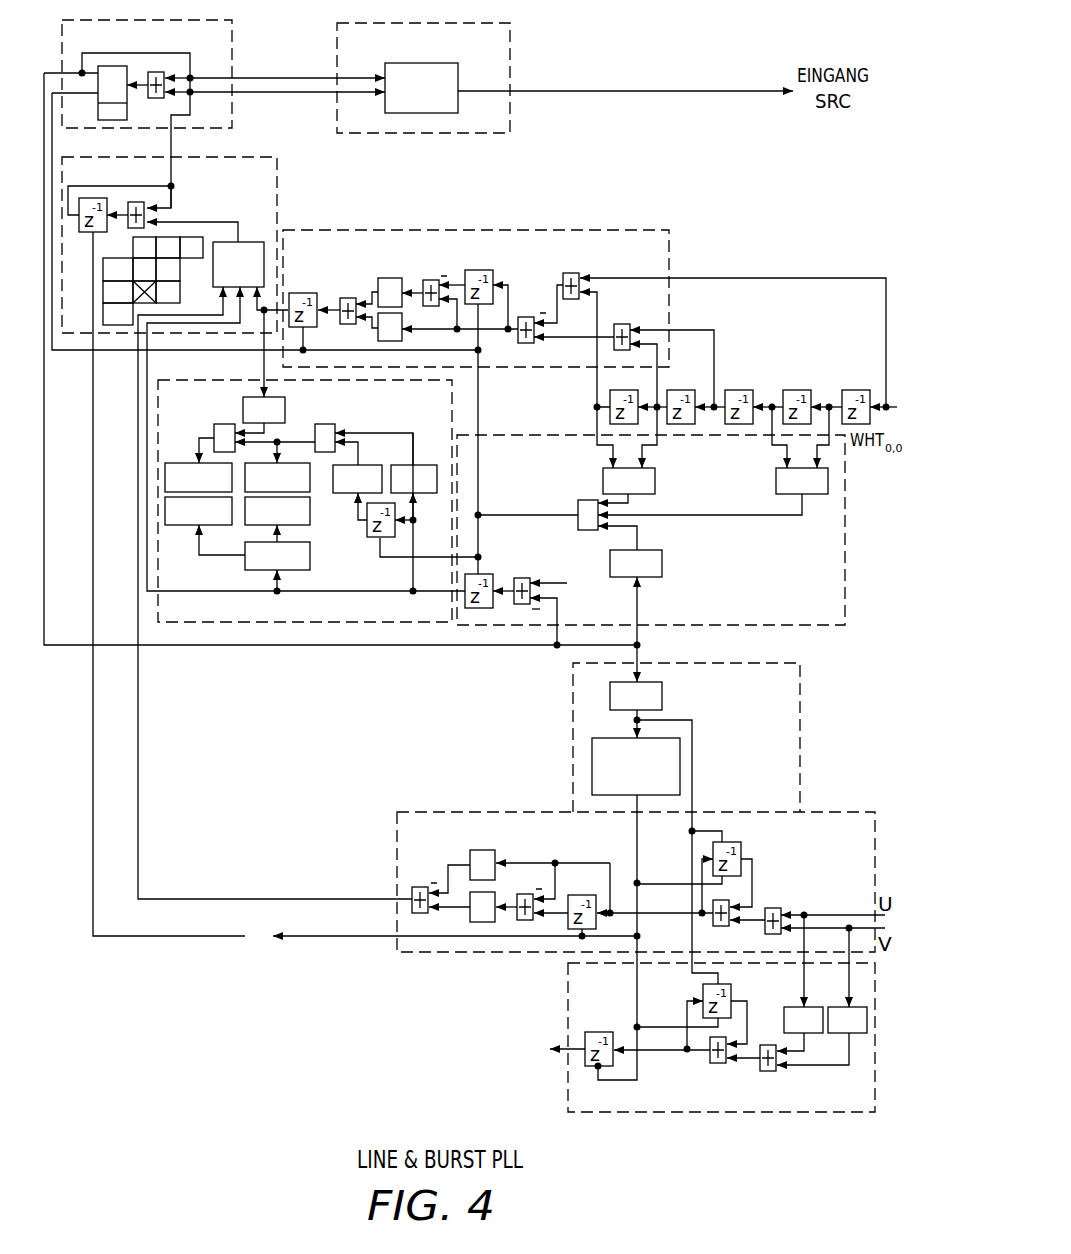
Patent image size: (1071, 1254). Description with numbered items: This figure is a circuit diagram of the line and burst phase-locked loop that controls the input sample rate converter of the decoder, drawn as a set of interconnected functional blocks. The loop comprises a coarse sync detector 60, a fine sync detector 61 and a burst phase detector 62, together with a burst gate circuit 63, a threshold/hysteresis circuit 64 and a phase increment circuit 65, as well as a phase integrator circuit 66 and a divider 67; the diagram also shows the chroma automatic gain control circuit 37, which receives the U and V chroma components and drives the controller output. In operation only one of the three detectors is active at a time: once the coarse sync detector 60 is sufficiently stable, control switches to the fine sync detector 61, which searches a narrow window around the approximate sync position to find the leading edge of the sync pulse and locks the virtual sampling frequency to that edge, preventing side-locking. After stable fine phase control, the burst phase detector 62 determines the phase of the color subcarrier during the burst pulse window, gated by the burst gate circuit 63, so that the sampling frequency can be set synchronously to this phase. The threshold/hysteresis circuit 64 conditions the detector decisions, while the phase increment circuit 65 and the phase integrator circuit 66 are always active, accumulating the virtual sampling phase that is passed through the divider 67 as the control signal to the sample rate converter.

The chroma automatic gain control circuit 37 is at (748, 1112).
The coarse sync detector 60 is at (818, 626).
The fine sync detector 61 is at (487, 229).
The burst phase detector 62 is at (808, 812).
The burst gate circuit 63 is at (800, 748).
The threshold/hysteresis circuit 64 is at (203, 623).
The phase increment circuit 65 is at (277, 185).
The phase integrator circuit 66 is at (232, 45).
The divider 67 is at (510, 47).